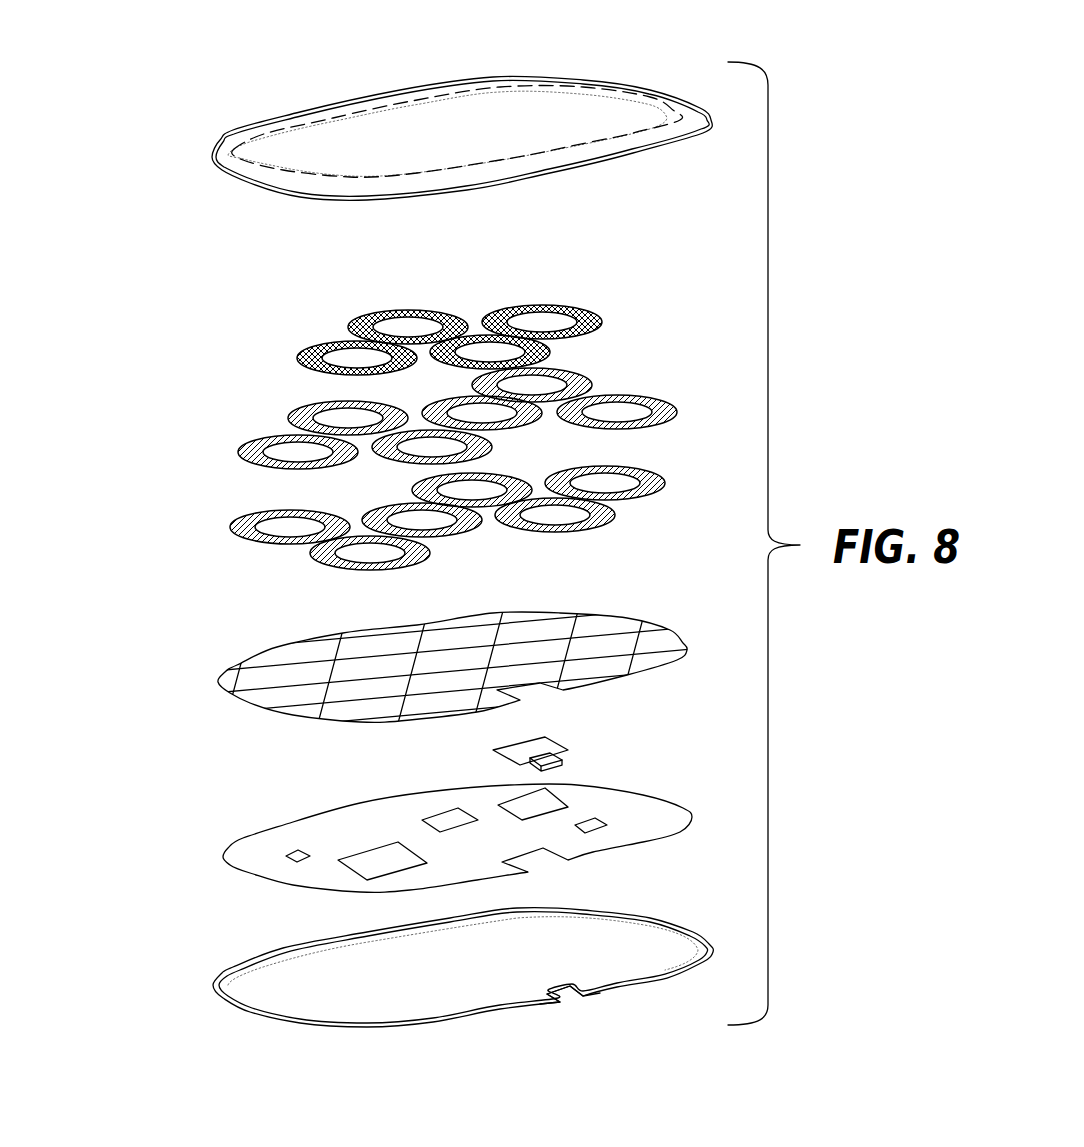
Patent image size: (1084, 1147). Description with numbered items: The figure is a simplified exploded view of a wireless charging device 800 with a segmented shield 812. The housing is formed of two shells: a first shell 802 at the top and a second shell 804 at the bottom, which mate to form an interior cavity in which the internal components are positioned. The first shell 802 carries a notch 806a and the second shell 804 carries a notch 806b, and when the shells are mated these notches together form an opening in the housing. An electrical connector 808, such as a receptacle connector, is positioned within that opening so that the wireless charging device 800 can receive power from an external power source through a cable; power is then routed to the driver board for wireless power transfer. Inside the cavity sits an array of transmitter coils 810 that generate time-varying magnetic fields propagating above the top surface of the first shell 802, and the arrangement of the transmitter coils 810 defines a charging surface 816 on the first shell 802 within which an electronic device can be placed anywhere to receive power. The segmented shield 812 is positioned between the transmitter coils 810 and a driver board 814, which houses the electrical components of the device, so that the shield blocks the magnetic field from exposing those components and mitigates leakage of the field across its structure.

The wireless charging device 800 is at (143, 75).
The first shell 802 is at (430, 148).
The second shell 804 is at (425, 1005).
The notch 806a is at (573, 180).
The notch 806b is at (585, 1020).
The electrical connector 808 is at (565, 760).
The array of transmitter coils 810 is at (160, 320).
The segmented shield 812 is at (228, 677).
The driver board 814 is at (228, 853).
The charging surface 816 is at (365, 118).